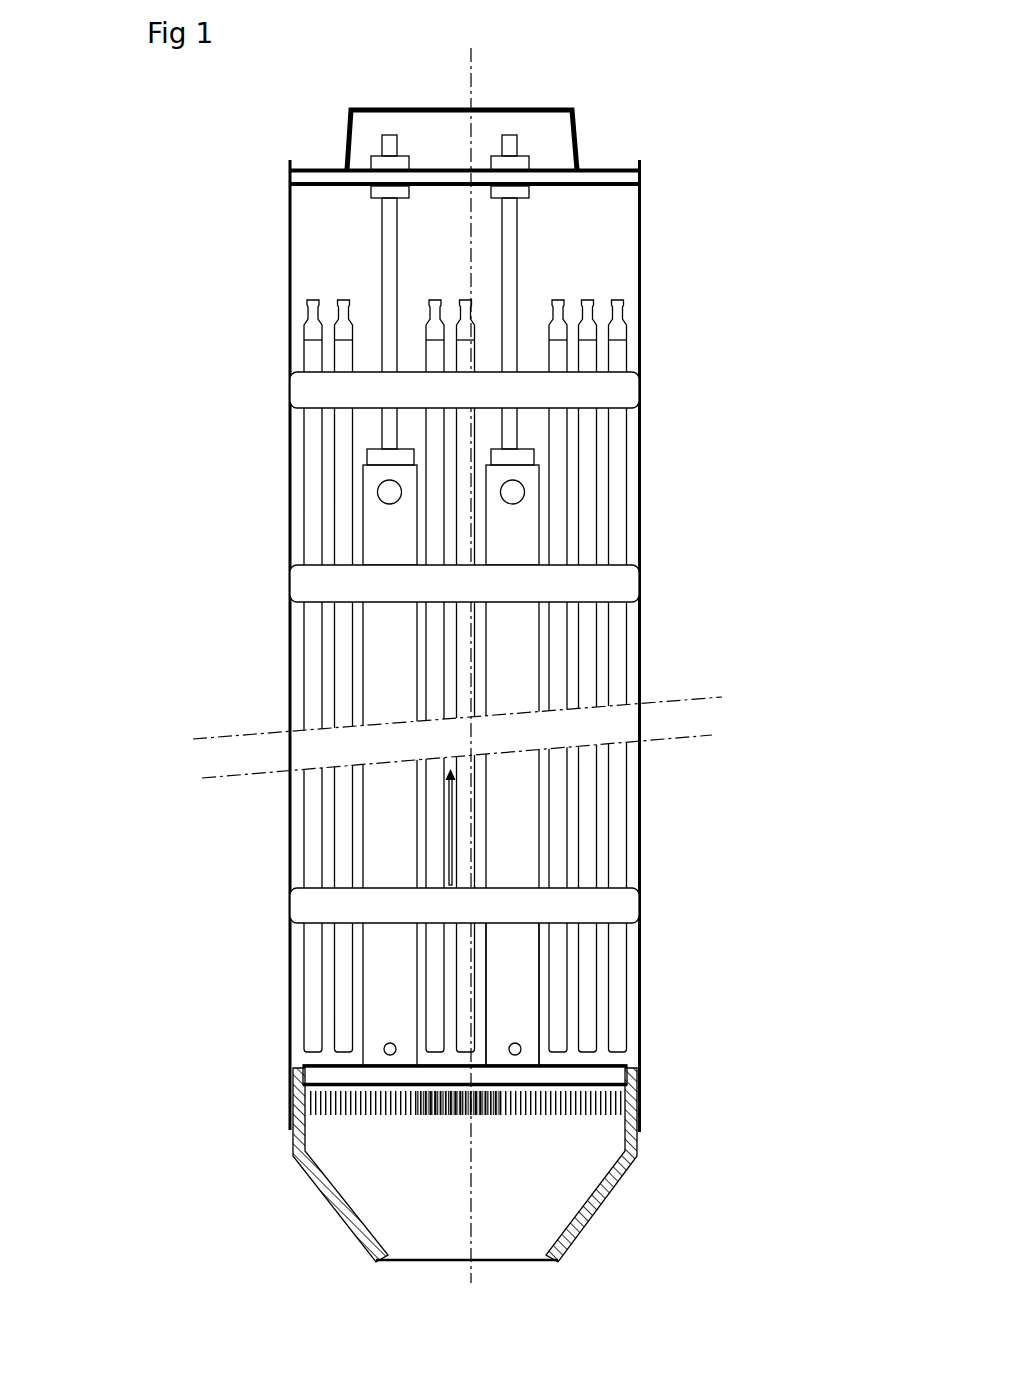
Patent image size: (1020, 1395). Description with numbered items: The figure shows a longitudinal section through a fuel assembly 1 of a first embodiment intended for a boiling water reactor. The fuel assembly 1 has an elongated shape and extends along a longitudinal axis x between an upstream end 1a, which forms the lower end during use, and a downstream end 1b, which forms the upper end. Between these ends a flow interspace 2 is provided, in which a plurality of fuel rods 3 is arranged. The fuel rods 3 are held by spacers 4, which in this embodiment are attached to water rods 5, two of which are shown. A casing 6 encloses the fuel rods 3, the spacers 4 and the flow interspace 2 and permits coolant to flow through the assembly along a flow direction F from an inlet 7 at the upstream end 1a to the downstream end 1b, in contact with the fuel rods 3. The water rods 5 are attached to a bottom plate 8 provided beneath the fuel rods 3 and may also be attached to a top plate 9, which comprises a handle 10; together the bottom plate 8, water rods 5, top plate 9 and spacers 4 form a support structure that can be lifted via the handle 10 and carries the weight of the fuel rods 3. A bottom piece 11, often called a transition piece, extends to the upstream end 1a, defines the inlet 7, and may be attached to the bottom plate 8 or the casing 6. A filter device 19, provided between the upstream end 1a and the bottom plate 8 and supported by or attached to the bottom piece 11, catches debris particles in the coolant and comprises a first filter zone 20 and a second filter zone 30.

The fuel assembly 1 is at (658, 90).
The upstream end 1a is at (597, 1239).
The downstream end 1b is at (665, 149).
The flow interspace 2 is at (543, 975).
The fuel rods 3 is at (462, 682).
The spacers 4 is at (618, 390).
The water rods 5 is at (500, 538).
The casing 6 is at (287, 638).
The inlet 7 is at (417, 1260).
The bottom plate 8 is at (333, 1072).
The top plate 9 is at (640, 177).
The handle 10 is at (352, 113).
The bottom piece 11 is at (297, 1138).
The filter device 19 is at (305, 1100).
The first filter zone 20 is at (368, 1102).
The second filter zone 30 is at (492, 1105).
The flow direction F is at (445, 817).
The longitudinal axis x is at (472, 85).